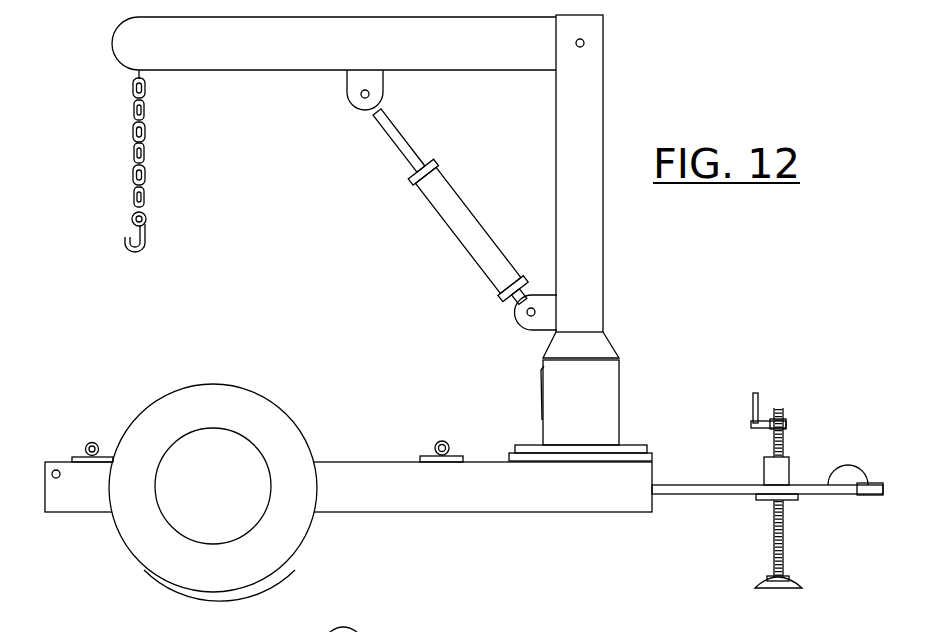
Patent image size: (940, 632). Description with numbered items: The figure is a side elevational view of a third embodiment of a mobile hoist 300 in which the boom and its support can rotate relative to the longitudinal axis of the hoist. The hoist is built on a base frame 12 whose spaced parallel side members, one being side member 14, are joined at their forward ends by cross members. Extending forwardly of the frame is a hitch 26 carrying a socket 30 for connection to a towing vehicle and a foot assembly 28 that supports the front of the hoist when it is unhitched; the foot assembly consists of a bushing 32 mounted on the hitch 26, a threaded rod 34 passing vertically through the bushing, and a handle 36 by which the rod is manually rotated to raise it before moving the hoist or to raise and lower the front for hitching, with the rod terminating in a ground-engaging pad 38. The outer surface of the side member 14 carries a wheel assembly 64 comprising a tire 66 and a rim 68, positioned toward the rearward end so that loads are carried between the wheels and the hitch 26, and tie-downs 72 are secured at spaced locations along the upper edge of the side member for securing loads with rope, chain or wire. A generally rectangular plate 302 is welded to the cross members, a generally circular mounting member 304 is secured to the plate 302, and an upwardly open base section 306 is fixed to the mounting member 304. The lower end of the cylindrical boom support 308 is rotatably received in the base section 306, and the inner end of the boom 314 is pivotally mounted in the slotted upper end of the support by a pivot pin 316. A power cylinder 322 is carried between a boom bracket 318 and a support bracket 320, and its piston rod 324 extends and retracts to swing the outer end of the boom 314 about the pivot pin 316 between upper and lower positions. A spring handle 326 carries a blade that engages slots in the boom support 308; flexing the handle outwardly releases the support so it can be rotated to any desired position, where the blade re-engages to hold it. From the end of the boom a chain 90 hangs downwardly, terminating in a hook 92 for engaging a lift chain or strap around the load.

The base frame 12 is at (459, 485).
The side member 14 is at (345, 500).
The hitch 26 is at (695, 486).
The foot assembly 28 is at (798, 475).
The socket 30 is at (846, 462).
The bushing 32 is at (789, 472).
The threaded rod 34 is at (773, 524).
The handle 36 is at (758, 400).
The foot pad 38 is at (786, 581).
The wheel assembly 64 is at (257, 476).
The tire 66 is at (192, 387).
The rim 68 is at (192, 530).
The tie-down 72 is at (83, 447).
The chain 90 is at (147, 131).
The hook 92 is at (148, 226).
The hoist 300 is at (406, 296).
The plate 302 is at (606, 462).
The mounting member 304 is at (628, 446).
The base section 306 is at (617, 387).
The boom support 308 is at (603, 255).
The boom 314 is at (453, 57).
The pivot pin 316 is at (584, 44).
The boom bracket 318 is at (379, 87).
The support bracket 320 is at (517, 319).
The power cylinder 322 is at (443, 218).
The piston rod 324 is at (394, 143).
The spring handle 326 is at (537, 372).